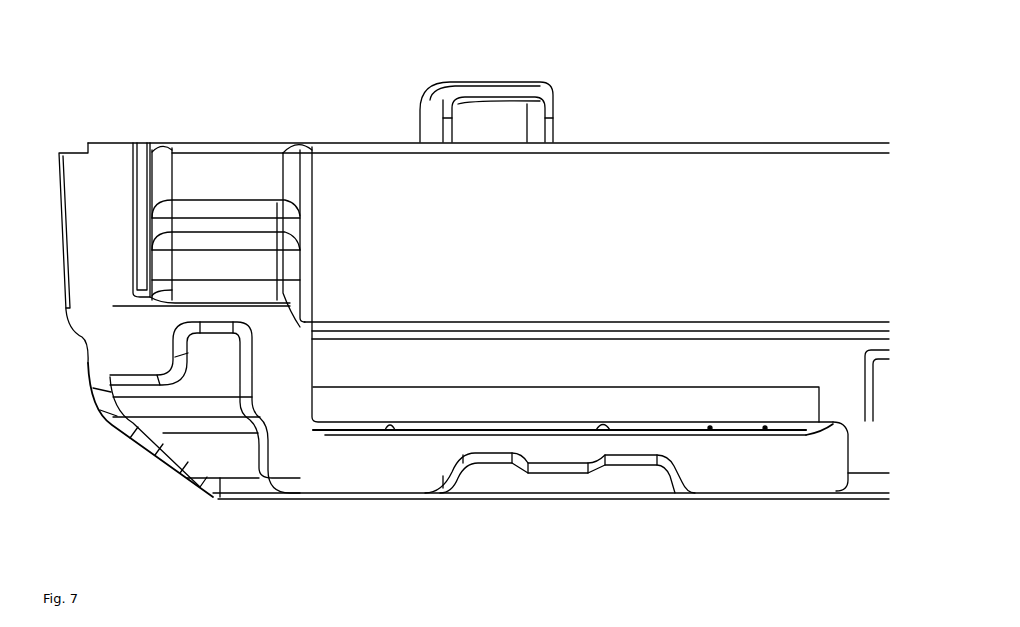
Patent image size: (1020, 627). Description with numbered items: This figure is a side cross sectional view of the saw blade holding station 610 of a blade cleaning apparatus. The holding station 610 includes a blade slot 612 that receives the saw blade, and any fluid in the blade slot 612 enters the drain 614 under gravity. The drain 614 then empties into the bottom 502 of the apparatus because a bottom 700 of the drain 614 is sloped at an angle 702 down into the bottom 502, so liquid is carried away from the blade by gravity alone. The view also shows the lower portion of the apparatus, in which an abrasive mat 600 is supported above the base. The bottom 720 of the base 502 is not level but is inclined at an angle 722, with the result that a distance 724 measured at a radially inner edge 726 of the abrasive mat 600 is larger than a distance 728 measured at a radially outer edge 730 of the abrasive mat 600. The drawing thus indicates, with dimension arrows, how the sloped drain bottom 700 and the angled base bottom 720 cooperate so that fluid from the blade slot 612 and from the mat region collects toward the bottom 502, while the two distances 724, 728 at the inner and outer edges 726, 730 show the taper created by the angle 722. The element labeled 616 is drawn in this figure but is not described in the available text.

The saw blade holding station 610 is at (249, 118).
The blade slot 612 is at (217, 263).
The drain 614 is at (215, 293).
The ribbed inner panel 616 is at (227, 173).
The bottom of the drain 700 is at (220, 302).
The angle 702 is at (162, 313).
The radially outer edge 730 is at (312, 405).
The abrasive mat 600 is at (610, 398).
The angle 722 is at (347, 377).
The distance 728 is at (405, 368).
The bottom of the base 720 is at (546, 432).
The bottom 502 is at (720, 457).
The distance 724 is at (814, 370).
The radially inner edge 726 is at (825, 397).